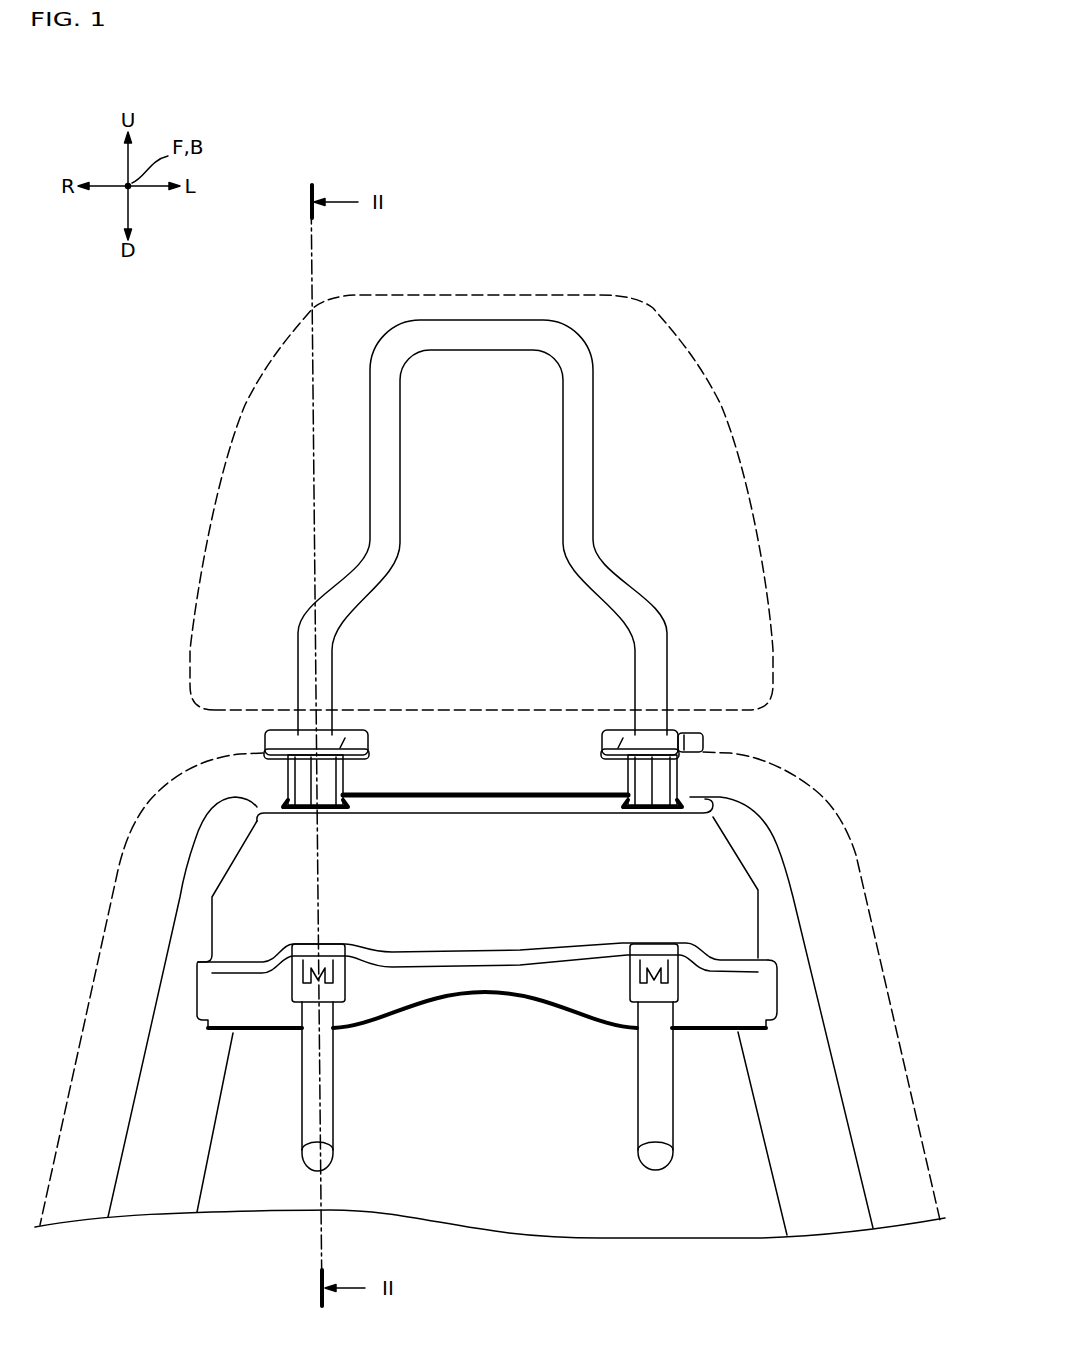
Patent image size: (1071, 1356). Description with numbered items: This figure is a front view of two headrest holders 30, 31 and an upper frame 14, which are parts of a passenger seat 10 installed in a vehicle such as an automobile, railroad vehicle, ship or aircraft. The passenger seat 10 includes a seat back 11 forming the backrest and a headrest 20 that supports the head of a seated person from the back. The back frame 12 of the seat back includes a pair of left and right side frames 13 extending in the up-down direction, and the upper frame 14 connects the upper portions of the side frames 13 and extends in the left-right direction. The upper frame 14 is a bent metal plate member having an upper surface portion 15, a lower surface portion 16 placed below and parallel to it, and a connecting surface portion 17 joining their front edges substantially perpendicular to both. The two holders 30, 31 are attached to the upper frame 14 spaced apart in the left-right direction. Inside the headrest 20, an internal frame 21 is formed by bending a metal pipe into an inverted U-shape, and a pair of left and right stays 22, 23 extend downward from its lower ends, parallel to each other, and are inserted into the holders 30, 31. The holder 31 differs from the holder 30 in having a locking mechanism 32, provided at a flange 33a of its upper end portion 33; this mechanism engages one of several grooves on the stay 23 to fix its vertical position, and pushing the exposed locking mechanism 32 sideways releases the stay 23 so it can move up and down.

The passenger seat 10 is at (806, 224).
The seat back 11 is at (848, 825).
The back frame 12 is at (776, 817).
The side frames 13 is at (133, 1163).
The upper frame 14 is at (487, 1042).
The upper surface portion 15 is at (483, 806).
The lower surface portion 16 is at (475, 960).
The connecting surface portion 17 is at (747, 920).
The headrest 20 is at (703, 372).
The internal frame 21 is at (577, 466).
The stay 22 is at (327, 1118).
The stay 23 is at (660, 1117).
The headrest holder 30 is at (376, 723).
The headrest holder 31 is at (592, 723).
The locking mechanism 32 is at (695, 738).
The upper end portion 33 is at (296, 779).
The flange 33a is at (345, 738).